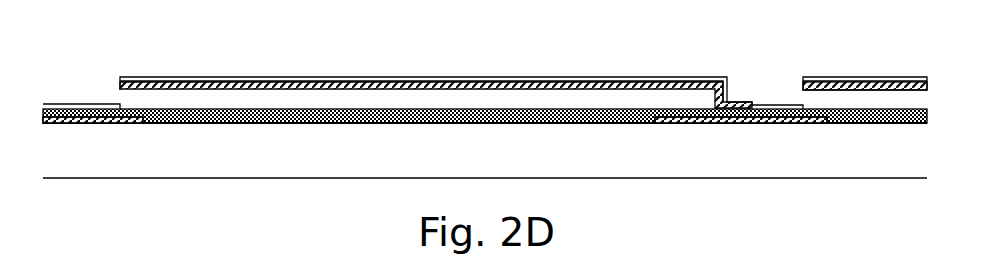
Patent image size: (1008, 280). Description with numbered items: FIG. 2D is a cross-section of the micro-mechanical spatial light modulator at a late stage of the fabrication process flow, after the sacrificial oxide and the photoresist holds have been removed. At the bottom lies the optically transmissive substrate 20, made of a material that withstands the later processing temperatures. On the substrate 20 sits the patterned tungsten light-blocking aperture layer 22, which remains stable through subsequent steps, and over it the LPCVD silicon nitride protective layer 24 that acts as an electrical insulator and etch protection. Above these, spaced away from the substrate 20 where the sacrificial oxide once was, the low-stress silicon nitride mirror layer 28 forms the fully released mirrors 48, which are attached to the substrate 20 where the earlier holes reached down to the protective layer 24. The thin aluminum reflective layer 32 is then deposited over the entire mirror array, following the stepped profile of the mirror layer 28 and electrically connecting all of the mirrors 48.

The optically transmissive substrate 20 is at (626, 164).
The light-blocking aperture layer 22 is at (772, 125).
The protective layer 24 is at (877, 115).
The mirror layer 28 is at (462, 85).
The reflective layer 32 is at (512, 80).
The fully released mirrors 48 is at (146, 75).